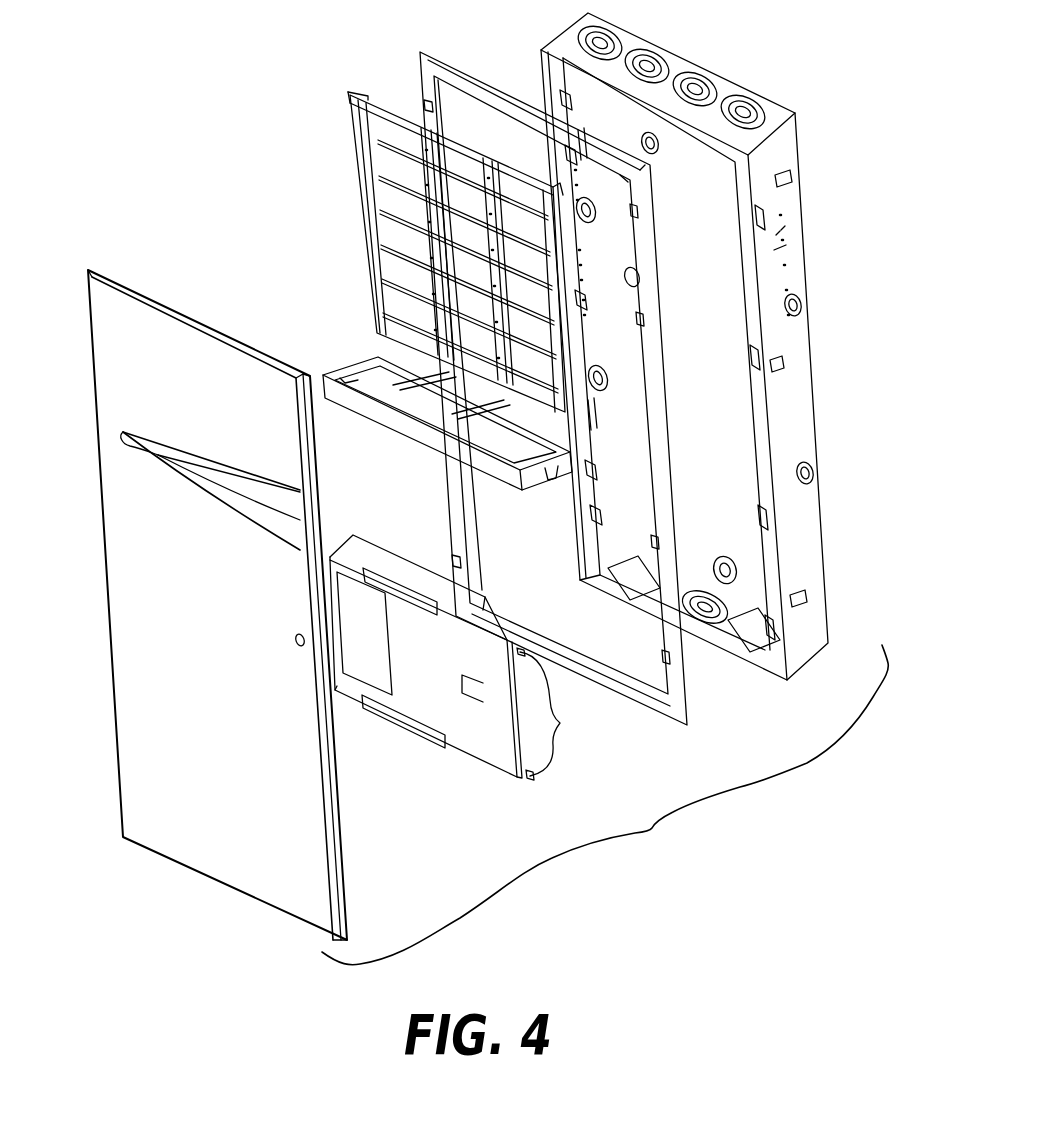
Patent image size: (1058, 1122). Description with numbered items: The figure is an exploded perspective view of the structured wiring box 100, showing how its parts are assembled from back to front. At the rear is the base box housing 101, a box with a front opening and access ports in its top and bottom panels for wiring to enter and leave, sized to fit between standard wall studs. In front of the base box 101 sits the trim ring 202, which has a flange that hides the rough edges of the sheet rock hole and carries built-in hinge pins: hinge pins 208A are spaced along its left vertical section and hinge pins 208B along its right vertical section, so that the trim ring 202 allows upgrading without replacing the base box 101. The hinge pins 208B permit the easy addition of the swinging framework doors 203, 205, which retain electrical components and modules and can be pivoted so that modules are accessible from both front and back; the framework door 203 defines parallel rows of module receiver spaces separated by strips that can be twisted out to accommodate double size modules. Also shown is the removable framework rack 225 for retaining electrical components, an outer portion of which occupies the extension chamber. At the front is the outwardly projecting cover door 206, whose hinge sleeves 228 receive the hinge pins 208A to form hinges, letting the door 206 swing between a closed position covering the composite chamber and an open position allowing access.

The structured wiring box 100 is at (650, 830).
The base box housing 101 is at (800, 195).
The trim ring 202 is at (450, 50).
The swinging framework door 203 is at (352, 165).
The framework door 205 is at (478, 765).
The cover door 206 is at (218, 709).
The hinge pins 208A is at (428, 104).
The hinge pins 208B is at (640, 320).
The removable framework rack 225 is at (392, 415).
The hinge sleeves 228 is at (560, 723).